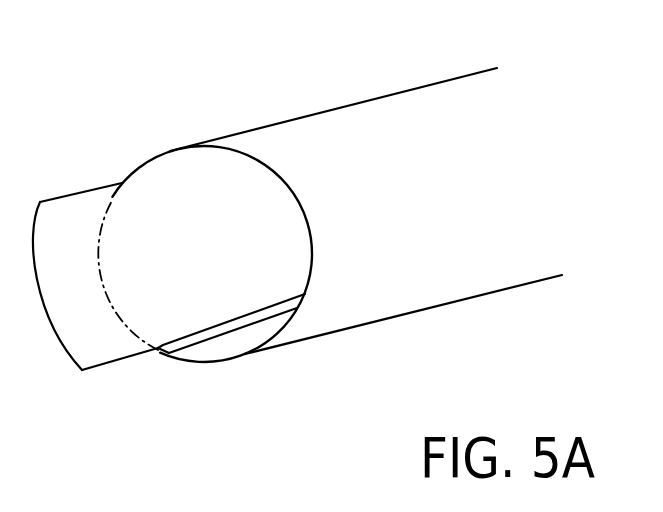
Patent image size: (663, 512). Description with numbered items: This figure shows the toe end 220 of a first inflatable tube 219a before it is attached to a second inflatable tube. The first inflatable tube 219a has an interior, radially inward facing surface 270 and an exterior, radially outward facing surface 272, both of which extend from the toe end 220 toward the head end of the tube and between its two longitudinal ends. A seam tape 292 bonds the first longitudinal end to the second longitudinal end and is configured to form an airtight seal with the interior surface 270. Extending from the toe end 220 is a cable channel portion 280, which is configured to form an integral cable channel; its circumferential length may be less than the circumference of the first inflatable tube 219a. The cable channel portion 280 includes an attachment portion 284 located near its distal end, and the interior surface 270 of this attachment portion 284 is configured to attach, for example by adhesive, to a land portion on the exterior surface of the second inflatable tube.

The first inflatable tube 219a is at (377, 127).
The interior surface 270 is at (203, 218).
The exterior surface 272 is at (407, 220).
The seam tape 292 is at (211, 332).
The toe end 220 is at (205, 362).
The cable channel portion 280 is at (116, 173).
The attachment portion 284 is at (113, 368).